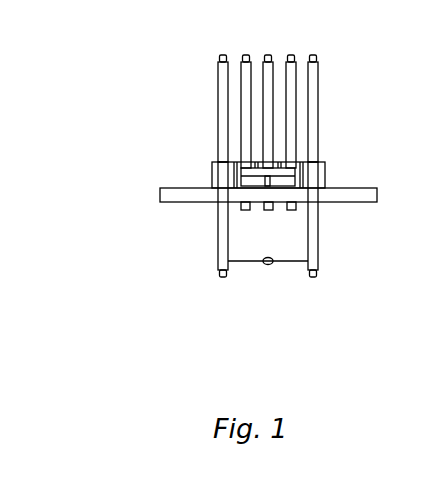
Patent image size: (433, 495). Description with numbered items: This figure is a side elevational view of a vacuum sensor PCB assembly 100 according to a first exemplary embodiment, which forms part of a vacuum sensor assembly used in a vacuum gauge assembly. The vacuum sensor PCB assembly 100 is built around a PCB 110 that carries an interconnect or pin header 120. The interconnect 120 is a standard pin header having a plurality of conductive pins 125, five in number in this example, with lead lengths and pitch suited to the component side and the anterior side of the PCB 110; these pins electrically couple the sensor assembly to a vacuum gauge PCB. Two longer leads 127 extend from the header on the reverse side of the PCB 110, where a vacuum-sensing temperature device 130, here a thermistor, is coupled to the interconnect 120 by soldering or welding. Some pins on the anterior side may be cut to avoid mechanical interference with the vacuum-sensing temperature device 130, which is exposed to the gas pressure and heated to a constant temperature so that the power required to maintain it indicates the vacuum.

The vacuum sensor PCB assembly 100 is at (275, 375).
The PCB 110 is at (220, 229).
The interconnect or pin header 120 is at (313, 146).
The conductive pins 125 is at (207, 119).
The mounting legs 127 is at (190, 244).
The vacuum-sensing temperature device 130 is at (311, 297).